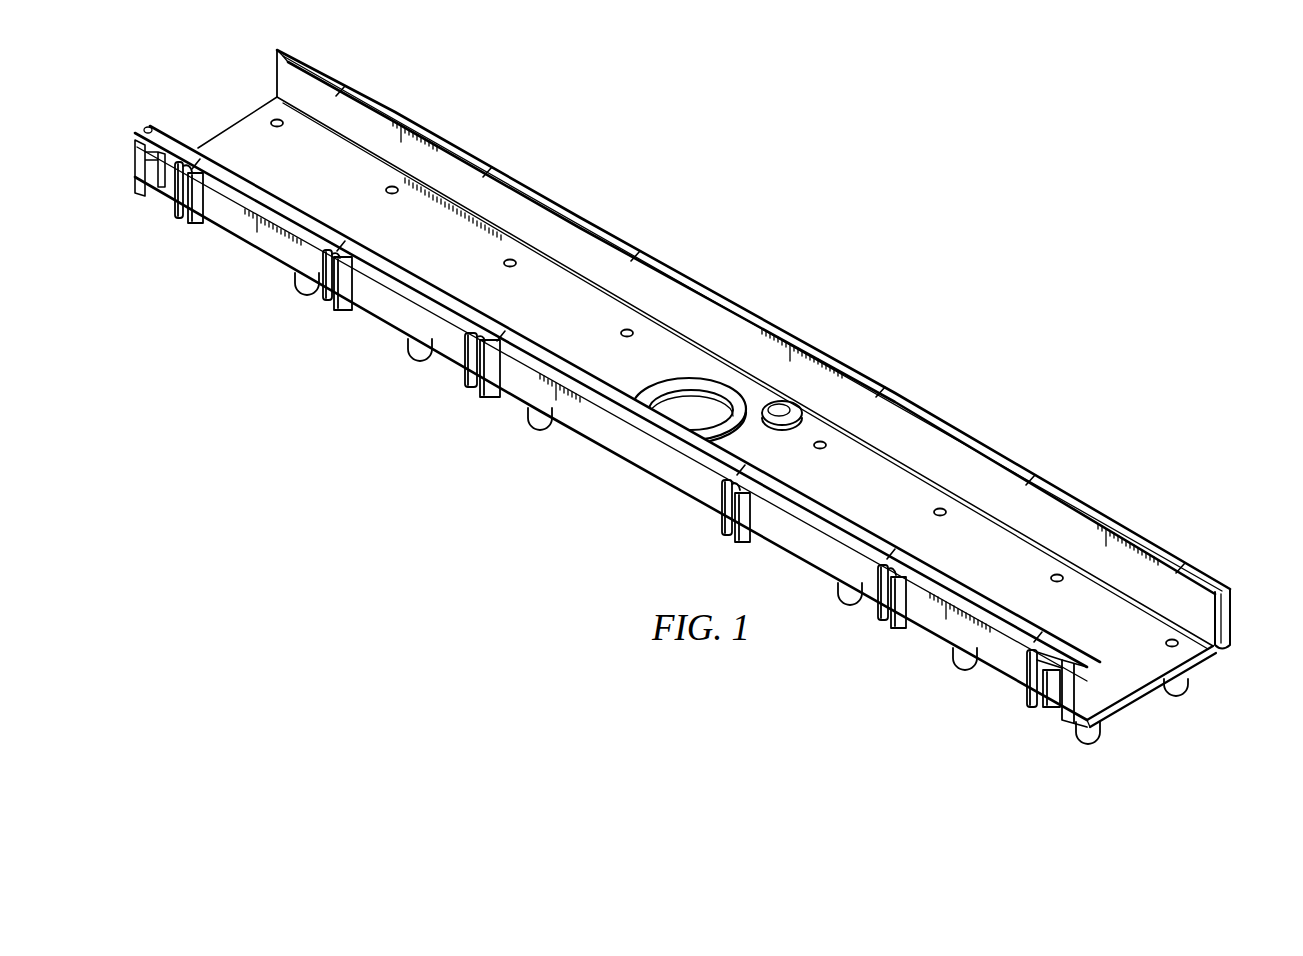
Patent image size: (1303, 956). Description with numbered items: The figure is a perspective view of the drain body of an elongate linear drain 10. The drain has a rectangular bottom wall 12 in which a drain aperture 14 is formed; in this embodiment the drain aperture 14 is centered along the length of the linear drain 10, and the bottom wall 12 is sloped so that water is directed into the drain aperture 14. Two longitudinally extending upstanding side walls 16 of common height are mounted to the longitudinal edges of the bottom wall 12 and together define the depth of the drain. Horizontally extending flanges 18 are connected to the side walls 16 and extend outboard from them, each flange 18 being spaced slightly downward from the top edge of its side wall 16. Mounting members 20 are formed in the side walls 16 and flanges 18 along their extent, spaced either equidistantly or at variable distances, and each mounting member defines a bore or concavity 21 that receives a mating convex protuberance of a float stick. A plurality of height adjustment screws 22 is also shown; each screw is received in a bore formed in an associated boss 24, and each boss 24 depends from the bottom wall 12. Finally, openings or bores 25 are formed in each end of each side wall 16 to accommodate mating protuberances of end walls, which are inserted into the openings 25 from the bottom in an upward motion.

The linear drain 10 is at (834, 228).
The bottom wall 12 is at (707, 412).
The drain aperture 14 is at (688, 404).
The side walls 16 is at (542, 198).
The flanges 18 is at (714, 278).
The mounting members 20 is at (174, 215).
The bore 21 is at (347, 82).
The height adjustment screws 22 is at (273, 118).
The boss 24 is at (296, 290).
The openings 25 is at (300, 52).